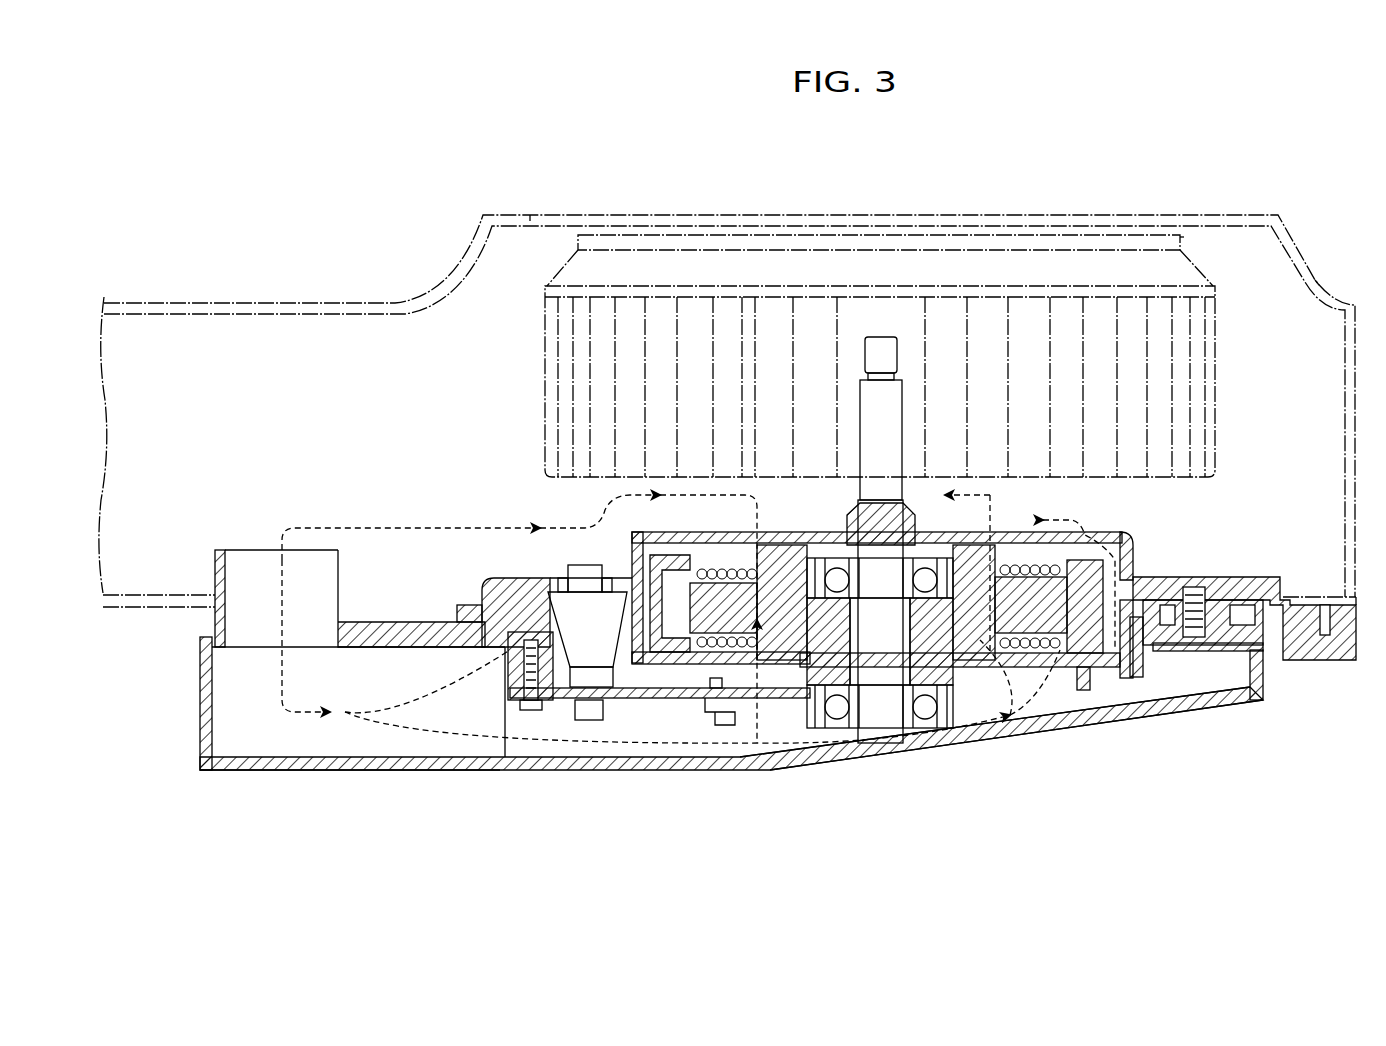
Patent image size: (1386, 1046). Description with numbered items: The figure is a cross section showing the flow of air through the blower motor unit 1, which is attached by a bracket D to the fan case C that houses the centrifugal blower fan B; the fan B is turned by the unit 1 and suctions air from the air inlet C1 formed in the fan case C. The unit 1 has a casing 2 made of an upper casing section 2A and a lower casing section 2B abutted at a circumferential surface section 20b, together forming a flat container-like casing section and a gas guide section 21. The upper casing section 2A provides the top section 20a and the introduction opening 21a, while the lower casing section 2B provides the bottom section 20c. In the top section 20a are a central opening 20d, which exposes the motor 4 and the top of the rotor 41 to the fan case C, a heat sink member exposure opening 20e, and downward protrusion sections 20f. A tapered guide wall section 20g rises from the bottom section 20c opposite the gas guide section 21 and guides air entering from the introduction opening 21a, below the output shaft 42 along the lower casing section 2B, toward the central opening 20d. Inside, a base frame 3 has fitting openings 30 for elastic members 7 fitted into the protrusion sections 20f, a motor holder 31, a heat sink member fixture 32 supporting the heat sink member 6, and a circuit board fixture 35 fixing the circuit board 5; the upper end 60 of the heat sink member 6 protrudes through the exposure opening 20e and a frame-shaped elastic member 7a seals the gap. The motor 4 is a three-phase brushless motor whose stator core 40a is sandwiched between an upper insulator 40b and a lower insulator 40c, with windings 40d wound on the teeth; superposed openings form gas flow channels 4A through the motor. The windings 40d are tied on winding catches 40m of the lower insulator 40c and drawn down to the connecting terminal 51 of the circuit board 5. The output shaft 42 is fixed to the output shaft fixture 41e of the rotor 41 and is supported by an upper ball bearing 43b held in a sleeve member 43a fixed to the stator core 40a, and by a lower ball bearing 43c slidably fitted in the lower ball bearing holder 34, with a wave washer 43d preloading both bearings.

The blower motor unit 1 is at (288, 470).
The casing 2 is at (198, 563).
The upper casing section 2A is at (392, 614).
The lower casing section 2B is at (293, 772).
The gas guide section 21 is at (196, 712).
The introduction opening 21a is at (235, 565).
The top section 20a is at (482, 598).
The circumferential surface section 20b is at (1268, 670).
The bottom section 20c is at (416, 771).
The central opening 20d is at (1100, 540).
The heat sink member exposure opening 20e is at (605, 590).
The protrusion sections 20f is at (1210, 598).
The guide wall section 20g is at (1165, 700).
The base frame 3 is at (1128, 703).
The fitting openings 30 is at (1218, 620).
The motor holder 31 is at (1060, 665).
The heat sink member fixture 32 is at (615, 699).
The lower ball bearing holder 34 is at (835, 722).
The circuit board fixture 35 is at (533, 705).
The motor 4 is at (705, 540).
The gas flow channels 4A is at (780, 585).
The stator core 40a is at (722, 583).
The upper insulator 40b is at (1035, 577).
The lower insulator 40c is at (742, 650).
The windings 40d is at (735, 600).
The winding catches 40m is at (812, 640).
The rotor 41 is at (1055, 555).
The output shaft fixture 41e is at (915, 545).
The output shaft 42 is at (882, 336).
The sleeve member 43a is at (835, 566).
The upper ball bearing 43b is at (930, 568).
The lower ball bearing 43c is at (925, 720).
The wave washer 43d is at (965, 690).
The circuit board 5 is at (575, 700).
The connecting terminal 51 is at (720, 712).
The heat sink member 6 is at (562, 562).
The upper end 60 is at (585, 564).
The elastic members 7 is at (1240, 605).
The frame-shaped elastic member 7a is at (545, 600).
The blower fan B is at (1198, 247).
The fan case C is at (1318, 284).
The air inlet C1 is at (532, 214).
The bracket D is at (1356, 606).